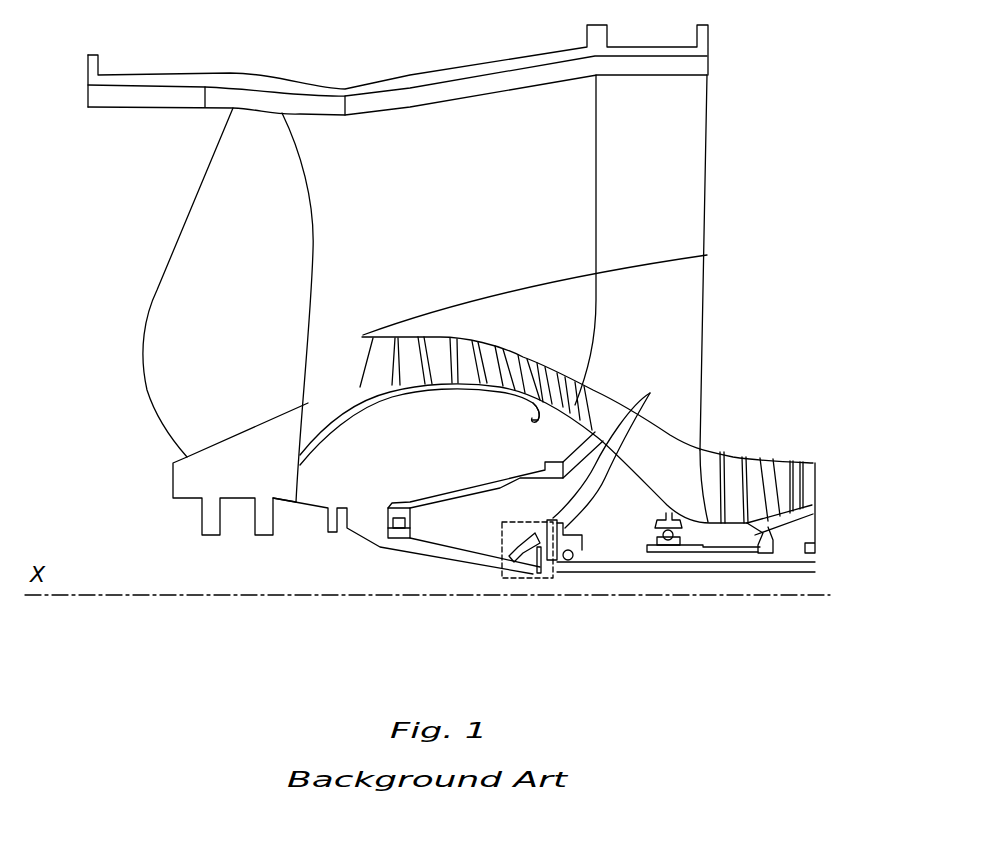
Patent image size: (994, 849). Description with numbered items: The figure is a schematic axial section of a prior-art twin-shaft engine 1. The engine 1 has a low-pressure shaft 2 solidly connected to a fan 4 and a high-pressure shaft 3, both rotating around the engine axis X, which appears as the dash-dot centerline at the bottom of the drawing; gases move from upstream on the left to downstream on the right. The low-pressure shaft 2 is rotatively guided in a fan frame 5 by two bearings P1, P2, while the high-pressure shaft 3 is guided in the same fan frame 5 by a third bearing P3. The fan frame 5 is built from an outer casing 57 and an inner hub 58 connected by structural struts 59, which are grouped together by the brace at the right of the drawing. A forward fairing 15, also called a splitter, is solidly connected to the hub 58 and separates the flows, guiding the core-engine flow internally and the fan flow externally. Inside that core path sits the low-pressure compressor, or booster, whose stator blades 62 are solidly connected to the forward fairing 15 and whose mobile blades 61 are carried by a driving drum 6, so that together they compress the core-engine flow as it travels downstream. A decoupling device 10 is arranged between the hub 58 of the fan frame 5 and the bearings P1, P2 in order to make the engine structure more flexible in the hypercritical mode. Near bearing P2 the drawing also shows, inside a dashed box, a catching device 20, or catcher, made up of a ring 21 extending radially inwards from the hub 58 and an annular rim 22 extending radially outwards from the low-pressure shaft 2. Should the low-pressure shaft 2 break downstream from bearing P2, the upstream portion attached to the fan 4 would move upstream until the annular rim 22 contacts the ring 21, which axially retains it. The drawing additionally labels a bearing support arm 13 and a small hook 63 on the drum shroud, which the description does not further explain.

The twin-shaft engine 1 is at (128, 190).
The low-pressure shaft 2 is at (355, 535).
The high-pressure shaft 3 is at (742, 550).
The fan 4 is at (187, 313).
The fan frame 5 is at (777, 70).
The driving drum 6 is at (330, 430).
The decoupling device 10 is at (650, 393).
The bearing support arm 13 is at (570, 500).
The forward fairing 15 is at (478, 323).
The catching device 20 is at (505, 585).
The ring 21 is at (518, 547).
The annular rim 22 is at (547, 573).
The outer casing 57 is at (695, 63).
The inner hub 58 is at (690, 280).
The structural struts 59 is at (688, 170).
The mobile blades 61 is at (408, 350).
The stator blades 62 is at (377, 363).
The shroud hook 63 is at (535, 420).
The bearing P1 is at (395, 538).
The bearing P2 is at (570, 560).
The bearing P3 is at (675, 547).